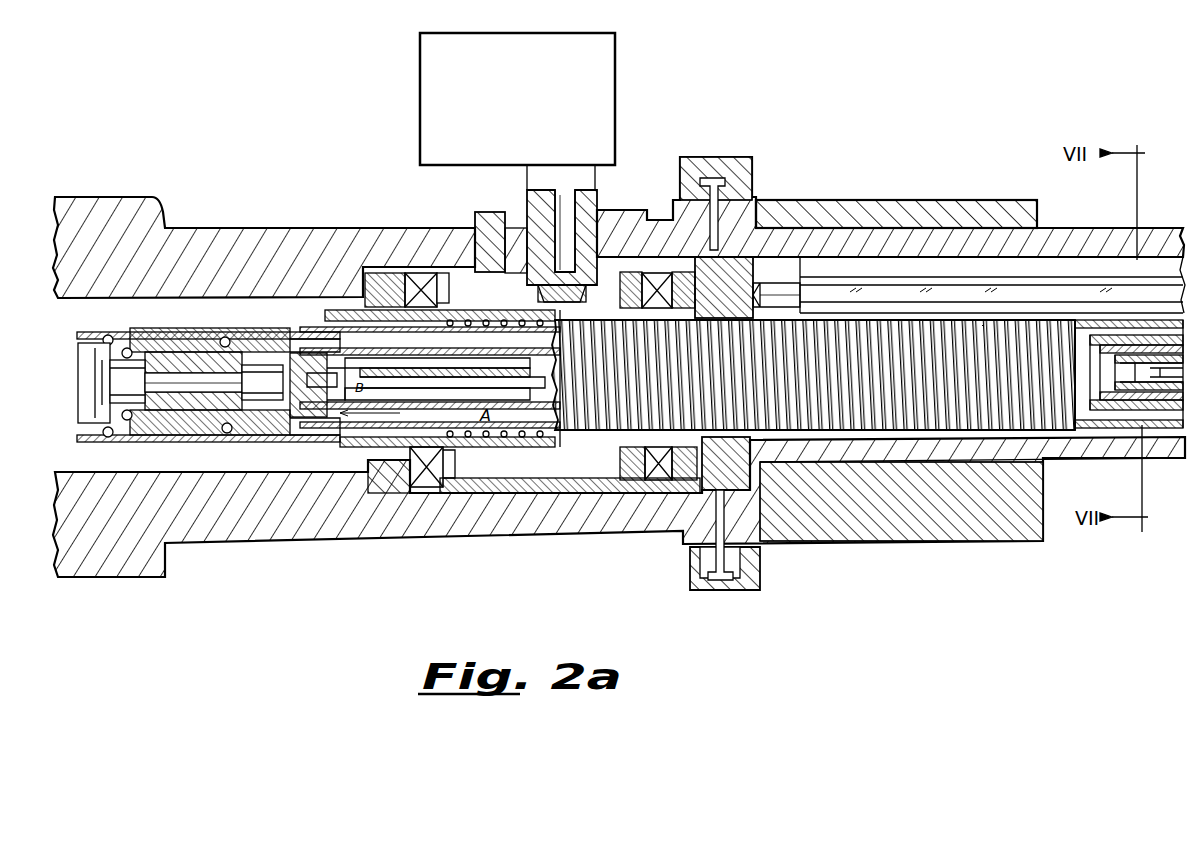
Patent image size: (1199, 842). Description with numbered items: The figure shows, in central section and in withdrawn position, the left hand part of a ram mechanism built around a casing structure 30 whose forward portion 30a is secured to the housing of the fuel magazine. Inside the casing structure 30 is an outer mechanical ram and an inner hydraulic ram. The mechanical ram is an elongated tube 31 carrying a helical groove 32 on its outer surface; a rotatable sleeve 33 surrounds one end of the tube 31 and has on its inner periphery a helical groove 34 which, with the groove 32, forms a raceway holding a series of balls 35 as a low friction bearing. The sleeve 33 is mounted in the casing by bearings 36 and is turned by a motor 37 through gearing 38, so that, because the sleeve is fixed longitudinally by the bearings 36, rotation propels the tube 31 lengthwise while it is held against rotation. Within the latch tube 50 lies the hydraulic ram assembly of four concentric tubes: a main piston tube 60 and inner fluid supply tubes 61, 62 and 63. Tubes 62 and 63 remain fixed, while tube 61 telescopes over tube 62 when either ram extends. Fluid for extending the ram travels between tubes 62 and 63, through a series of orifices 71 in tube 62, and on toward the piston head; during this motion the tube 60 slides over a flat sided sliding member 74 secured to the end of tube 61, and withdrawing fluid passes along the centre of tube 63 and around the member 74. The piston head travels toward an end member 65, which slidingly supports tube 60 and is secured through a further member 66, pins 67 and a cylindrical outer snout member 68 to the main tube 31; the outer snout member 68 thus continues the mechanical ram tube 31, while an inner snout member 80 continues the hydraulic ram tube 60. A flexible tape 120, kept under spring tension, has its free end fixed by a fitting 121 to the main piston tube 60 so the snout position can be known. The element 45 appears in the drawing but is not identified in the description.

The forward portion 30a is at (168, 226).
The casing structure 30 is at (820, 240).
The elongated tube 31 is at (880, 410).
The helical groove 32 is at (920, 410).
The rotatable sleeve 33 is at (425, 300).
The helical groove 34 is at (455, 445).
The balls 35 is at (525, 445).
The bearings 36 is at (655, 480).
The motor 37 is at (603, 72).
The gearing 38 is at (545, 285).
The tube 45 is at (935, 300).
The latch tube 50 is at (286, 336).
The main piston tube 60 is at (1083, 335).
The inner fluid supply tube 61 is at (1118, 345).
The inner fluid supply tube 62 is at (1125, 385).
The inner fluid supply tube 63 is at (1165, 385).
The end member 65 is at (330, 425).
The further member 66 is at (262, 420).
The pins 67 is at (226, 430).
The cylindrical outer snout member 68 is at (240, 432).
The orifices 71 is at (470, 378).
The flat sided sliding member 74 is at (380, 340).
The inner snout member 80 is at (290, 405).
The flexible tape 120 is at (1140, 365).
The fitting 121 is at (346, 447).